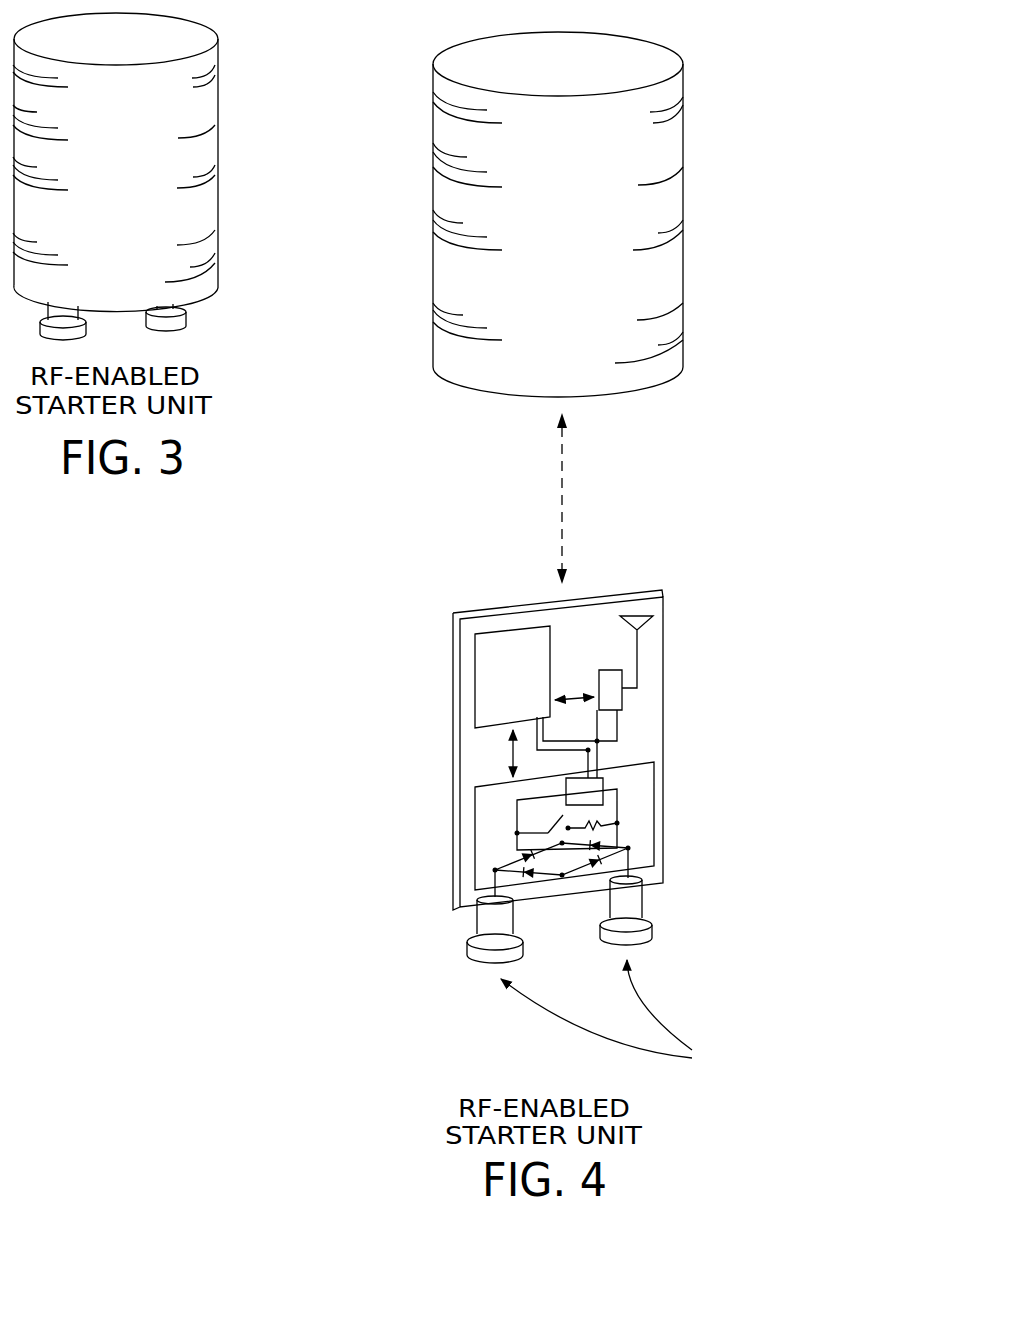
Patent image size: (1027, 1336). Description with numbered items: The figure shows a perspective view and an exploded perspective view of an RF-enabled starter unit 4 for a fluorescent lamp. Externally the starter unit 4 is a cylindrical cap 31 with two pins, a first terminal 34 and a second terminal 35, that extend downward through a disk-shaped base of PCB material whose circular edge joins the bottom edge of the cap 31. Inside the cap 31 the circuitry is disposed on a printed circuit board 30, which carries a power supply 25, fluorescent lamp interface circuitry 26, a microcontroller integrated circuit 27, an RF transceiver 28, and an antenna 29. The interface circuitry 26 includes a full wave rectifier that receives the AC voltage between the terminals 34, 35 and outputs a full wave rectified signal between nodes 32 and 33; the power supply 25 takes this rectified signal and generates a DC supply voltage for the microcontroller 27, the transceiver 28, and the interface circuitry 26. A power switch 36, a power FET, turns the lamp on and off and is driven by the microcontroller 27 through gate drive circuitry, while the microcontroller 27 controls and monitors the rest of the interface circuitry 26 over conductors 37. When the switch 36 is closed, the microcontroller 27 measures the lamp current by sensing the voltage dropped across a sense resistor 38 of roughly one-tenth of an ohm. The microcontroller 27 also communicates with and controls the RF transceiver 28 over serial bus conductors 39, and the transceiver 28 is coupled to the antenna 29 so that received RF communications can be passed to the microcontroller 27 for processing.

In FIG. 3, the starter unit 4 is at (312, 50).
In FIG. 4, the starter unit 4 is at (458, 548).
In FIG. 4, the power supply 25 is at (595, 801).
In FIG. 4, the fluorescent lamp interface circuitry 26 is at (338, 833).
In FIG. 4, the microcontroller integrated circuit 27 is at (475, 692).
In FIG. 4, the RF transceiver 28 is at (636, 707).
In FIG. 4, the antenna 29 is at (646, 650).
In FIG. 4, the printed circuit board 30 is at (664, 604).
In FIG. 4, the cylindrical cap 31 is at (575, 219).
In FIG. 4, the node 32 is at (517, 833).
In FIG. 4, the node 33 is at (634, 823).
In FIG. 4, the first terminal 34 is at (467, 947).
In FIG. 4, the second terminal 35 is at (600, 931).
In FIG. 4, the power switch 36 is at (557, 824).
In FIG. 4, the conductors 37 is at (513, 752).
In FIG. 4, the sense resistor 38 is at (604, 823).
In FIG. 4, the serial bus conductors 39 is at (577, 697).